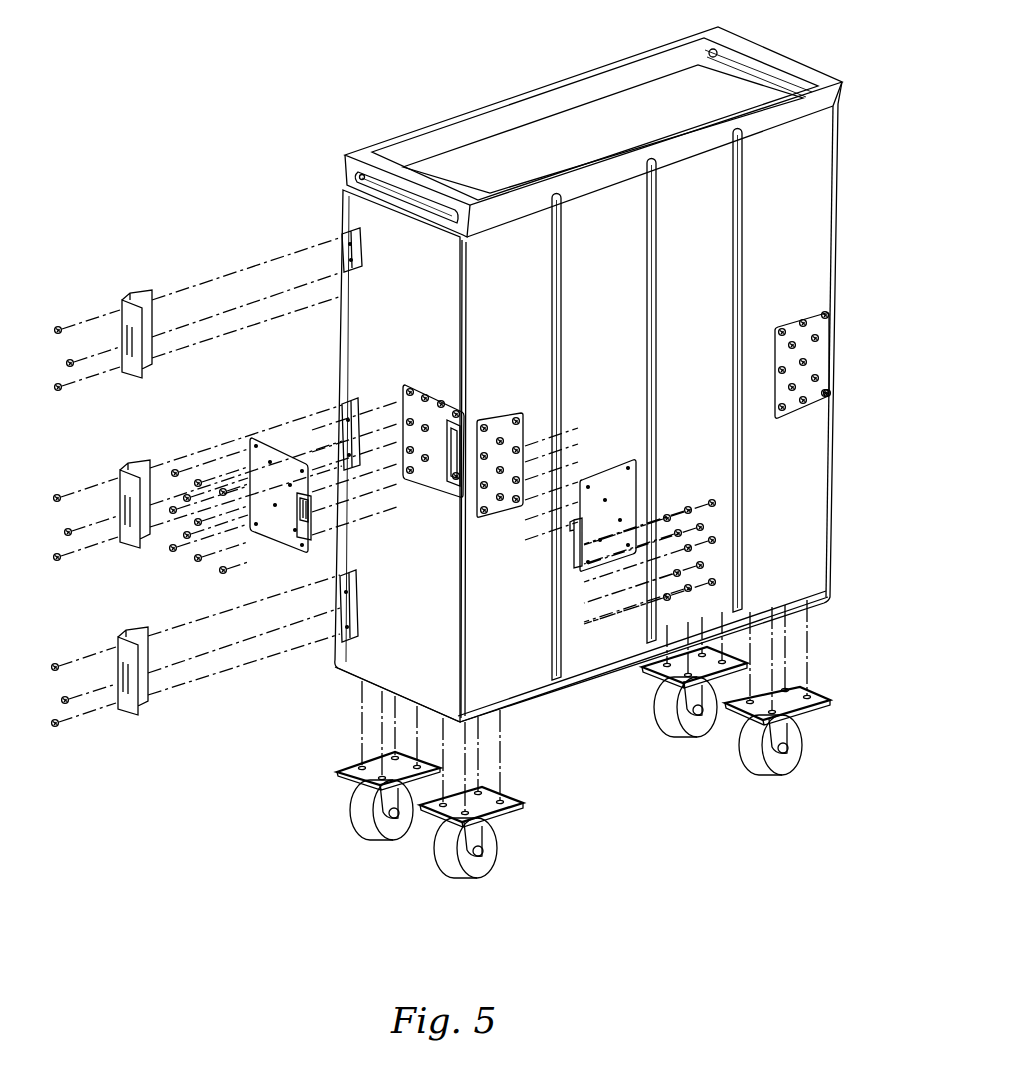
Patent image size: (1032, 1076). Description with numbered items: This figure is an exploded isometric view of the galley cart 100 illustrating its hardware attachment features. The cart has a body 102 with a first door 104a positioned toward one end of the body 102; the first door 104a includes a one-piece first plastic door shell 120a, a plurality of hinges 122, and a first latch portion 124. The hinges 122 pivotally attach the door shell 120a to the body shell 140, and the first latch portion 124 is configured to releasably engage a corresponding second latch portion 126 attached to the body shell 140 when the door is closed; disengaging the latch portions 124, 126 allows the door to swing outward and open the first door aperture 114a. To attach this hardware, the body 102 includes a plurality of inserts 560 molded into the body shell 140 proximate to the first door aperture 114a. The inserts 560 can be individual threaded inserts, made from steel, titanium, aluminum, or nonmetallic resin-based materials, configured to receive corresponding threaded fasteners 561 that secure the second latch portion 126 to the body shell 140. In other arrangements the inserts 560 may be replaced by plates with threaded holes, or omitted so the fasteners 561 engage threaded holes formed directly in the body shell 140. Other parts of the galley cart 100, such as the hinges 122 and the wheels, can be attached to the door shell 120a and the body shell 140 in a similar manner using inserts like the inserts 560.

The galley cart 100 is at (338, 35).
The body 102 is at (478, 110).
The first door 104a is at (353, 203).
The first door aperture 114a is at (472, 263).
The first plastic door shell 120a is at (350, 667).
The hinges 122 is at (122, 312).
The first latch portion 124 is at (278, 542).
The second latch portion 126 is at (582, 570).
The body shell 140 is at (580, 650).
The inserts 560 is at (505, 418).
The threaded fasteners 561 is at (716, 503).